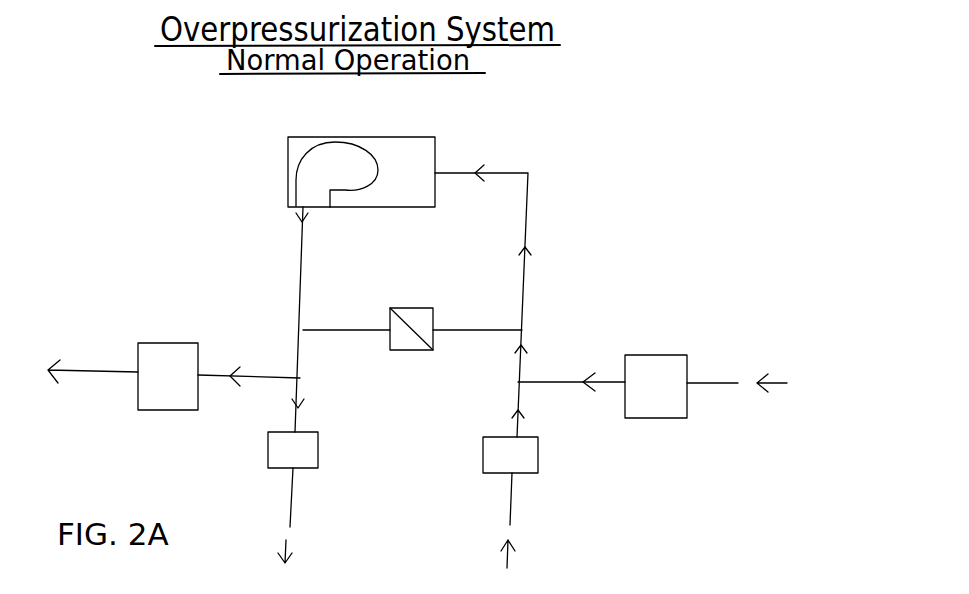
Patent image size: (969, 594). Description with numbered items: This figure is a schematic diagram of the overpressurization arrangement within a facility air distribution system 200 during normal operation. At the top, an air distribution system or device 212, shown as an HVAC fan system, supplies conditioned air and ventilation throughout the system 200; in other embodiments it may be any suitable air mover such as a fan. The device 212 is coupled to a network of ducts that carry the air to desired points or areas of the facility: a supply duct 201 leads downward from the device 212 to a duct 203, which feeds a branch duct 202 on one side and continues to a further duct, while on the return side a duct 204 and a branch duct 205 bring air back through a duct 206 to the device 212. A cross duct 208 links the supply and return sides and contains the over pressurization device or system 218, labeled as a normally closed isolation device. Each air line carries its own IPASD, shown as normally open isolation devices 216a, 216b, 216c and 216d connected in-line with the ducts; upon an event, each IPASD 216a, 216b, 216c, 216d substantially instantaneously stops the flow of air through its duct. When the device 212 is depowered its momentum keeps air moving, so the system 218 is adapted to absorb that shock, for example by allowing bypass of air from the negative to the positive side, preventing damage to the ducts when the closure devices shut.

The facility air distribution system 200 is at (596, 155).
The air distribution system or device 212 is at (437, 141).
The duct 201 is at (304, 251).
The duct 206 is at (528, 276).
The duct 208 is at (318, 330).
The over pressurization device or system 218 is at (434, 345).
The duct 203 is at (302, 378).
The duct 202 is at (250, 375).
The IPASD 216a is at (155, 343).
The IPASD 216b is at (318, 450).
The IPASD 216c is at (483, 460).
The IPASD 216d is at (663, 355).
The duct 205 is at (543, 379).
The duct 204 is at (520, 400).